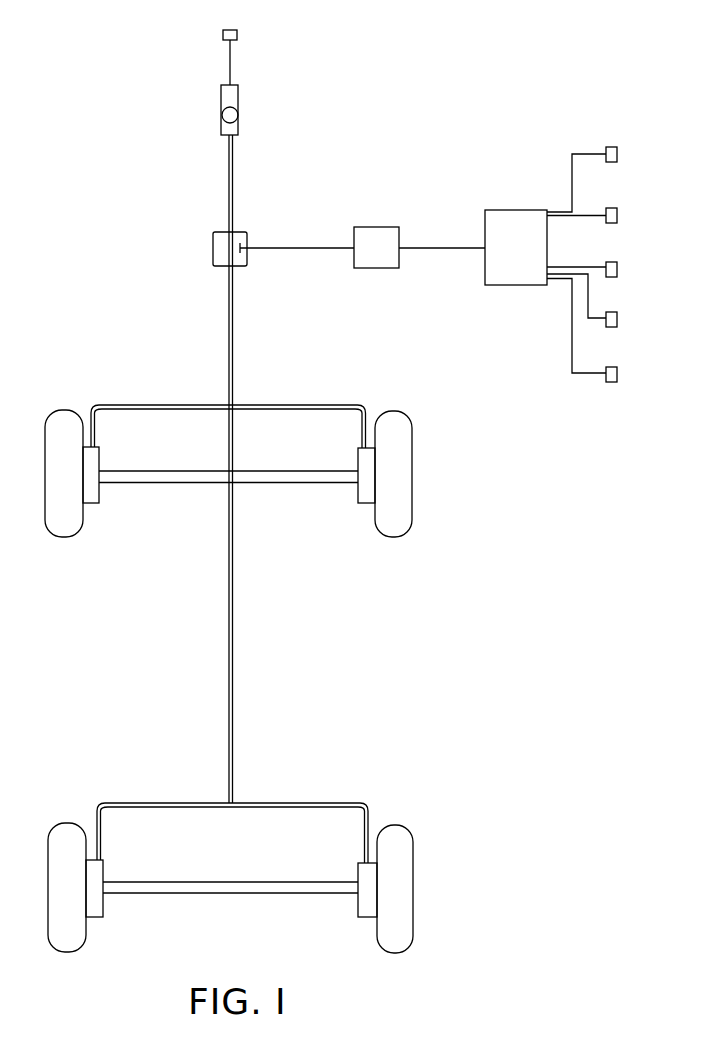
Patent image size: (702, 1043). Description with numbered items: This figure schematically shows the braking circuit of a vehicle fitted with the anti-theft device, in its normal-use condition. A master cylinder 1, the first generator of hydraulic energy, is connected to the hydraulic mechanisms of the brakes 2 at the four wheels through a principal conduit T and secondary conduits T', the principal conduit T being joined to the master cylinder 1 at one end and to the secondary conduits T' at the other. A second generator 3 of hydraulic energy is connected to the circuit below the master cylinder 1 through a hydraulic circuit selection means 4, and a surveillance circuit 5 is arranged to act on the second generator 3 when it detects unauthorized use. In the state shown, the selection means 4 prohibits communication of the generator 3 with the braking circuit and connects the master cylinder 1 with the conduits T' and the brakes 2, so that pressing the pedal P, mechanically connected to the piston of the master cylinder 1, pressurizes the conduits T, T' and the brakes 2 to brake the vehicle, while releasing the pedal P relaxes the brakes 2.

The pedal P is at (223, 33).
The master cylinder 1 is at (238, 96).
The principal conduit T is at (208, 469).
The hydraulic circuit selection means 4 is at (213, 252).
The second generator of hydraulic energy 3 is at (371, 233).
The surveillance circuit 5 is at (514, 218).
The secondary conduits T' is at (229, 634).
The brakes 2 is at (91, 495).